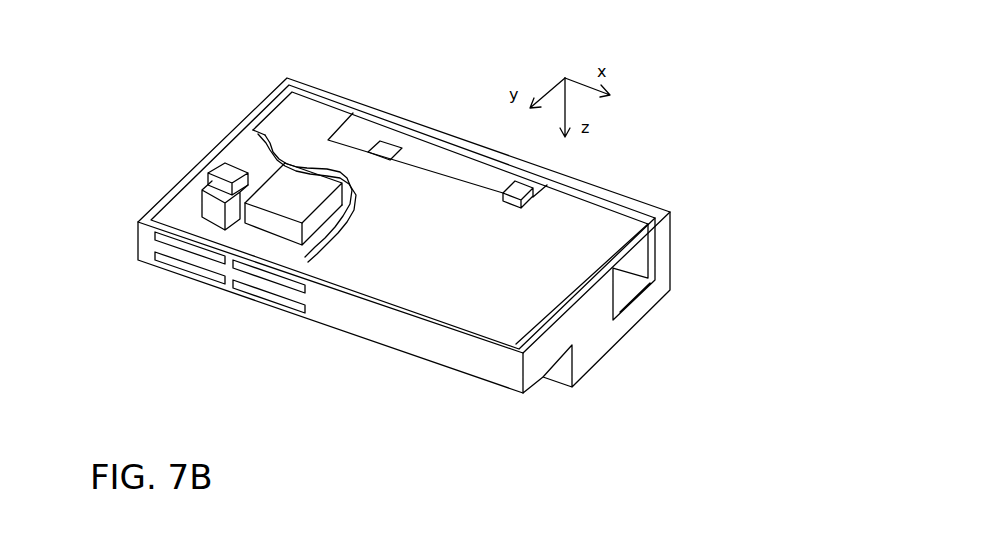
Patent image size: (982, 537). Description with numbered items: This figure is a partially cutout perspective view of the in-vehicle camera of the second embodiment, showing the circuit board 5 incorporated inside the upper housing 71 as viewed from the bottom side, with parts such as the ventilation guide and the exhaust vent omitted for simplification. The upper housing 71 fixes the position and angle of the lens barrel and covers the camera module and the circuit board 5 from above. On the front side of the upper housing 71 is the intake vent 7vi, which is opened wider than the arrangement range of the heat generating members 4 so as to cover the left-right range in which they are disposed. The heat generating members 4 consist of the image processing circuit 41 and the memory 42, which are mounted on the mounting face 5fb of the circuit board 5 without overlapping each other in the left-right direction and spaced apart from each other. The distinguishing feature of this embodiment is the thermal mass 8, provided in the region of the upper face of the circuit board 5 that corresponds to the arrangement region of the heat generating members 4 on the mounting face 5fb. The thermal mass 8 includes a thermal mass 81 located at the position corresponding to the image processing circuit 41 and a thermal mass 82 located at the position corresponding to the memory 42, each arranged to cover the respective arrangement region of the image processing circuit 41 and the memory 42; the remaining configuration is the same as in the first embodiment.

The heat generating members 4 is at (326, 131).
The image processing circuit 41 is at (312, 199).
The memory 42 is at (226, 165).
The circuit board 5 is at (552, 238).
The mounting face 5fb is at (386, 228).
The intake vent 7vi is at (170, 263).
The upper housing 71 is at (471, 361).
The thermal mass 8 is at (219, 313).
The thermal mass 81 is at (280, 216).
The thermal mass 82 is at (221, 195).